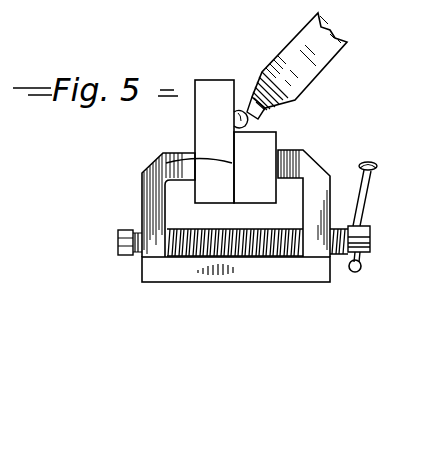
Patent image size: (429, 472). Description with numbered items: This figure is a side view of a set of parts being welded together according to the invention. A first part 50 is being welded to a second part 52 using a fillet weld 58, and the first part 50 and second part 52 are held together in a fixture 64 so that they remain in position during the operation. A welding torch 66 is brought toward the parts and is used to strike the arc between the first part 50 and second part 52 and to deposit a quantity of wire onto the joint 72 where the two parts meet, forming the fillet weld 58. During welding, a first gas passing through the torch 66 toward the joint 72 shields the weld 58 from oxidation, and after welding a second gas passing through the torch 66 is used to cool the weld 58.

The first part 50 is at (266, 147).
The second part 52 is at (208, 136).
The fillet weld 58 is at (247, 125).
The fixture 64 is at (300, 282).
The welding torch 66 is at (342, 47).
The joint 72 is at (154, 165).